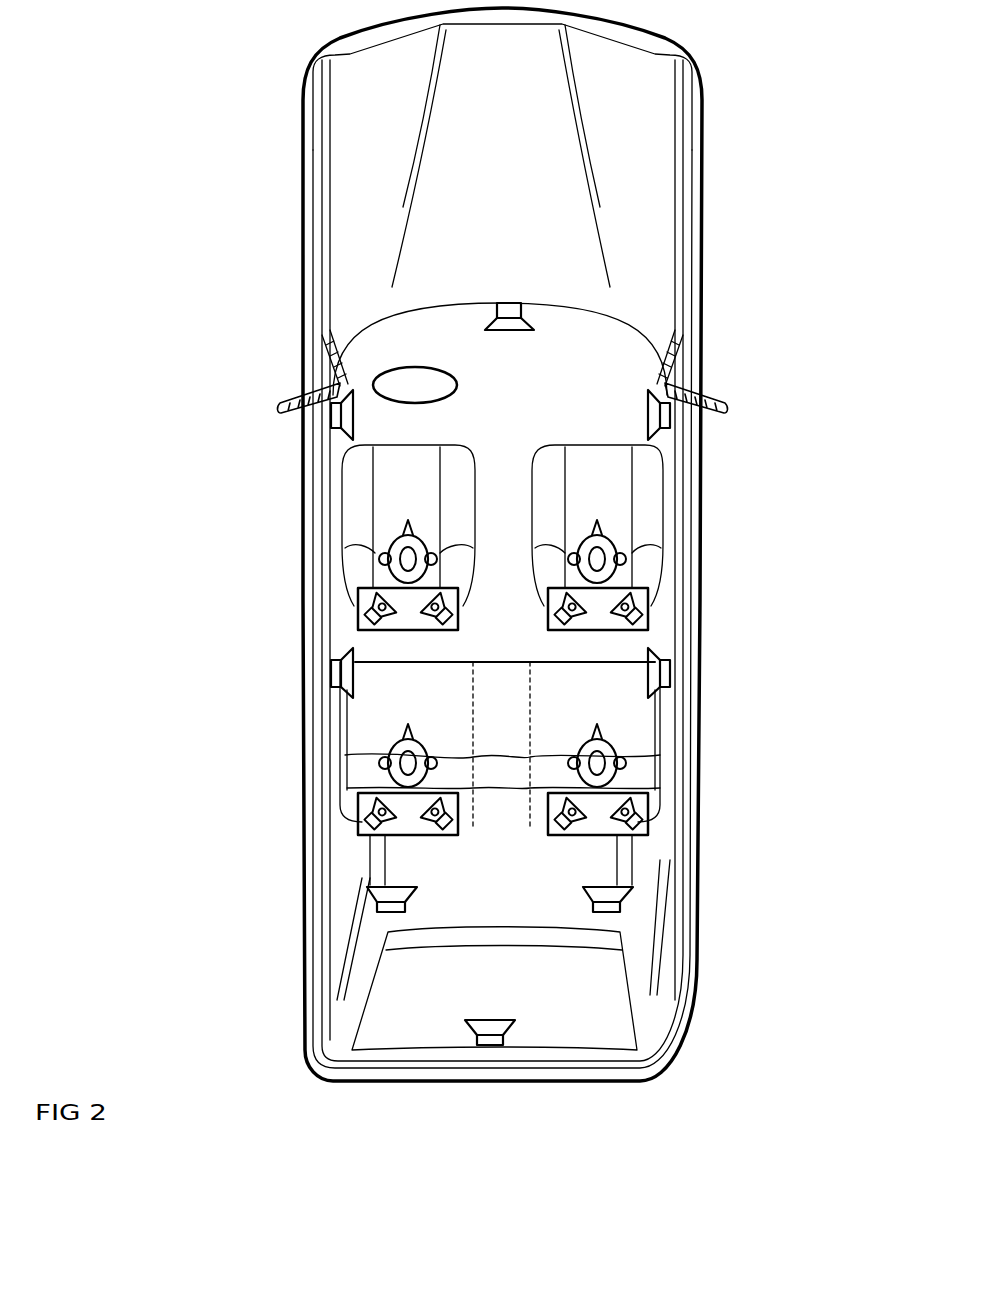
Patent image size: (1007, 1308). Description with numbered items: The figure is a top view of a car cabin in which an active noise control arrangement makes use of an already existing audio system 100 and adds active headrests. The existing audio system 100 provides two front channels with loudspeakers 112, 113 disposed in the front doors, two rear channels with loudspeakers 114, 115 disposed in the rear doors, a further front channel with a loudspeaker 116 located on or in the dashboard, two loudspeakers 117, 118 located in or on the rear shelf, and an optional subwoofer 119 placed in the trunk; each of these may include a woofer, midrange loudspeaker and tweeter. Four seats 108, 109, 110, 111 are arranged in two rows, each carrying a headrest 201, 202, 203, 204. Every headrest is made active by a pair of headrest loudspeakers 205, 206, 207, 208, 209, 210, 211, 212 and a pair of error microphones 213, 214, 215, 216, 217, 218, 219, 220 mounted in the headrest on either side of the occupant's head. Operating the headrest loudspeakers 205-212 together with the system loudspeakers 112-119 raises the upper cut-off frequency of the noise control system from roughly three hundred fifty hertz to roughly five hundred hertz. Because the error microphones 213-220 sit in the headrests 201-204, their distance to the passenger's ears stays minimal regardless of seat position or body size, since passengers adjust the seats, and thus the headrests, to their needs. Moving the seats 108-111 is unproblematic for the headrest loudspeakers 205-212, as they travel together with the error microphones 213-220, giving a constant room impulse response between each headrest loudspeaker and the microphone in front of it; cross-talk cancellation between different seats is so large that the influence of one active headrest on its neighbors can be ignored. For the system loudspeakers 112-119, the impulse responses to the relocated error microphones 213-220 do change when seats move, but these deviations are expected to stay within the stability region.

The audio system 100 is at (636, 364).
The seat 108 is at (355, 481).
The seat 109 is at (643, 492).
The seat 110 is at (368, 732).
The seat 111 is at (645, 720).
The loudspeaker 112 is at (333, 430).
The loudspeaker 113 is at (668, 435).
The loudspeaker 114 is at (332, 654).
The loudspeaker 115 is at (668, 695).
The loudspeaker 116 is at (510, 332).
The loudspeaker 117 is at (385, 912).
The loudspeaker 118 is at (625, 912).
The subwoofer 119 is at (487, 1047).
The headrest 201 is at (405, 632).
The headrest 202 is at (597, 632).
The headrest 203 is at (418, 836).
The headrest 204 is at (600, 836).
The headrest loudspeaker 205 is at (358, 620).
The headrest loudspeaker 206 is at (458, 623).
The headrest loudspeaker 207 is at (549, 630).
The headrest loudspeaker 208 is at (648, 622).
The headrest loudspeaker 209 is at (358, 825).
The headrest loudspeaker 210 is at (450, 837).
The headrest loudspeaker 211 is at (553, 837).
The headrest loudspeaker 212 is at (648, 816).
The error microphone 213 is at (362, 592).
The error microphone 214 is at (442, 587).
The error microphone 215 is at (555, 588).
The error microphone 216 is at (648, 590).
The error microphone 217 is at (360, 797).
The error microphone 218 is at (442, 797).
The error microphone 219 is at (557, 797).
The error microphone 220 is at (648, 795).